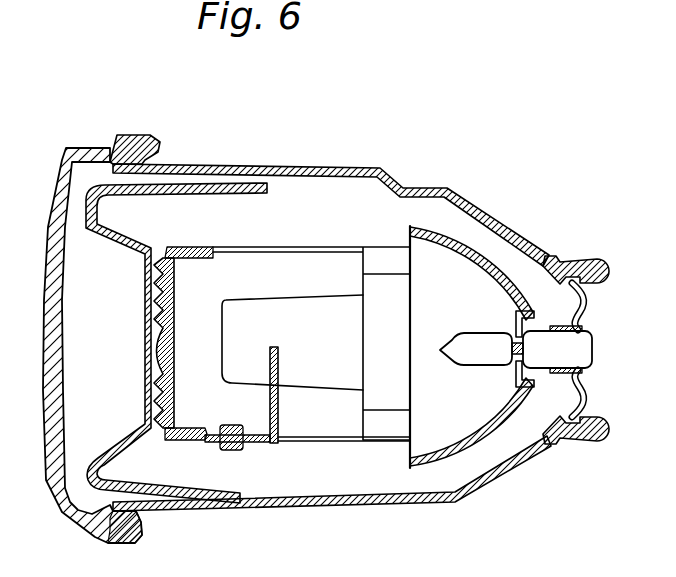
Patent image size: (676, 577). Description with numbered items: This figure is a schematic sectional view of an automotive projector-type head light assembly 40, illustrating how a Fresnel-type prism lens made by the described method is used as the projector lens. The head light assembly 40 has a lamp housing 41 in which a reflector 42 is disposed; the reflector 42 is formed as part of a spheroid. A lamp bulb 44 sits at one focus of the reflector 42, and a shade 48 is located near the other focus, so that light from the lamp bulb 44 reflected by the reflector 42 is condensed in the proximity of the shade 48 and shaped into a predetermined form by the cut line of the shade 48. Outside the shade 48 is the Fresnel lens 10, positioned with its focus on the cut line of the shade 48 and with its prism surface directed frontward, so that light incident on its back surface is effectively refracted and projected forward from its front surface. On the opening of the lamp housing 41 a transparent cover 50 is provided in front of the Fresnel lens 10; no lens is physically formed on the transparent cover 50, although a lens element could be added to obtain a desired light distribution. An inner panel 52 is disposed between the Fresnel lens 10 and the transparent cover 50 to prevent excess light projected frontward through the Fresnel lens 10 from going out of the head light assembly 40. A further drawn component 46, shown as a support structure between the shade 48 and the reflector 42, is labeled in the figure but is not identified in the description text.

The Fresnel lens 10 is at (175, 327).
The head light assembly 40 is at (517, 224).
The lamp housing 41 is at (506, 468).
The reflector 42 is at (471, 244).
The lamp bulb 44 is at (478, 358).
The lamp support 46 is at (349, 243).
The shade 48 is at (278, 400).
The transparent cover 50 is at (83, 153).
The inner panel 52 is at (231, 185).